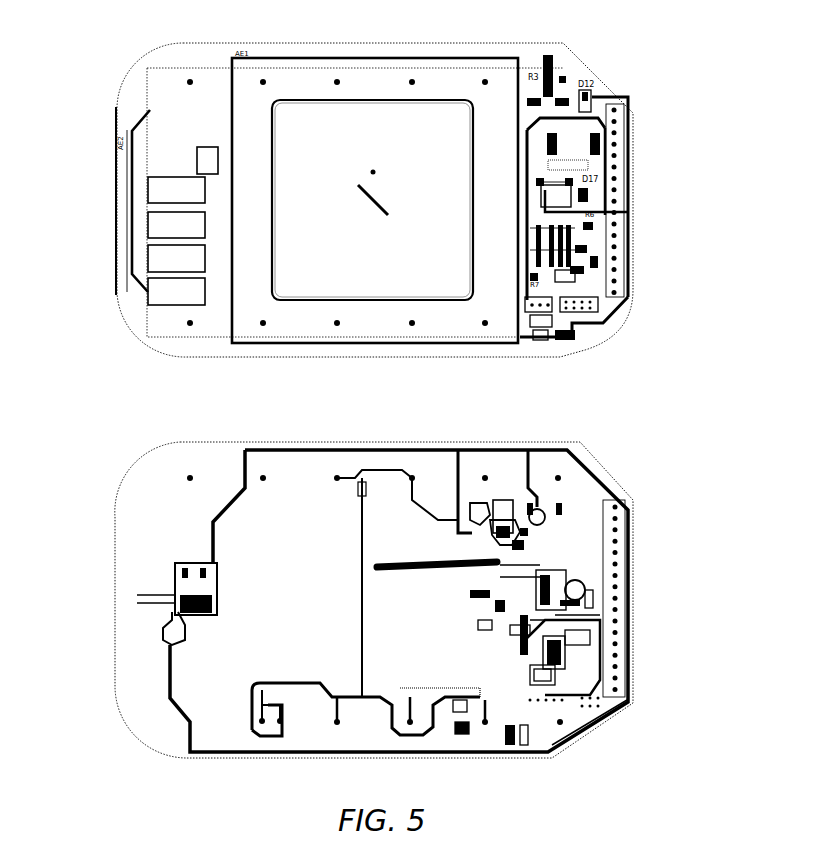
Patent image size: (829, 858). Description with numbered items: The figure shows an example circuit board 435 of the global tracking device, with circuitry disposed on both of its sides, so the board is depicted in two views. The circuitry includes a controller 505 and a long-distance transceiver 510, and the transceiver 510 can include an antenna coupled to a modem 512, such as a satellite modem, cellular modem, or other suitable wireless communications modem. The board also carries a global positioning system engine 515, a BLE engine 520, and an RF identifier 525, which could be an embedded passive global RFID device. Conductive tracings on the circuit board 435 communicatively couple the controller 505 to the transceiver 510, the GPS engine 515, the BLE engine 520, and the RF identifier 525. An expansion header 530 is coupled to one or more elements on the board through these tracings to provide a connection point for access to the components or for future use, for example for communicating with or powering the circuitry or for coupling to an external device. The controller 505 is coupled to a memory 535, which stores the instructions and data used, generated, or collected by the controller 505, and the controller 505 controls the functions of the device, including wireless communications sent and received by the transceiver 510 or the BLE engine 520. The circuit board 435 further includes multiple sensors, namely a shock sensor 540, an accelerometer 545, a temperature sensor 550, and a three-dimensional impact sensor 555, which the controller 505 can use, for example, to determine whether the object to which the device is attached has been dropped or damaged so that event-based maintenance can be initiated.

The circuit board 435 is at (637, 237).
The controller 505 is at (552, 593).
The long-distance transceiver 510 is at (372, 200).
The modem 512 is at (547, 187).
The global positioning system (GPS) engine 515 is at (517, 532).
The BLE engine 520 is at (200, 597).
The RF identifier 525 is at (197, 148).
The expansion header 530 is at (614, 178).
The memory 535 is at (548, 652).
The shock sensor 540 is at (176, 190).
The accelerometer 545 is at (176, 225).
The temperature sensor 550 is at (176, 258).
The three-dimensional (3D) impact sensor 555 is at (176, 291).